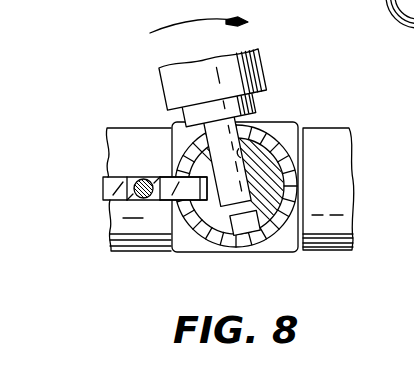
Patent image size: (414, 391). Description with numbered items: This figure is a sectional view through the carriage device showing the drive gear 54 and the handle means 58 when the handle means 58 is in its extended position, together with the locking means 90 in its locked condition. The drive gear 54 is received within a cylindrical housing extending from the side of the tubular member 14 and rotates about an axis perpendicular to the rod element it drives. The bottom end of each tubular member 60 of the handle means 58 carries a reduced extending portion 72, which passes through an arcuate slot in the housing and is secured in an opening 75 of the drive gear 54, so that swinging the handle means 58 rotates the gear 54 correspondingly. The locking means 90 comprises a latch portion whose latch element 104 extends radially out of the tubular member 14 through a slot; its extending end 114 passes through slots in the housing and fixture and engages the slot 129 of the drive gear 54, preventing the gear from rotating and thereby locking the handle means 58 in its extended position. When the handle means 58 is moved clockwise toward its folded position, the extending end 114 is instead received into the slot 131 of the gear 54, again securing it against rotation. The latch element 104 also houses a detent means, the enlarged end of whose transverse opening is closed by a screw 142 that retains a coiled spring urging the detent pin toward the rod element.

The tubular member 14 is at (345, 8).
The drive gear 54 is at (268, 173).
The handle means 58 is at (257, 72).
The tubular member of handle means 60 is at (173, 80).
The extending portion 72 is at (235, 130).
The opening 75 is at (237, 154).
The locking means 90 is at (124, 193).
The latch element 104 is at (111, 182).
The extending end 114 is at (180, 183).
The slot 129 is at (206, 200).
The slot 131 is at (250, 233).
The screw 142 is at (135, 187).